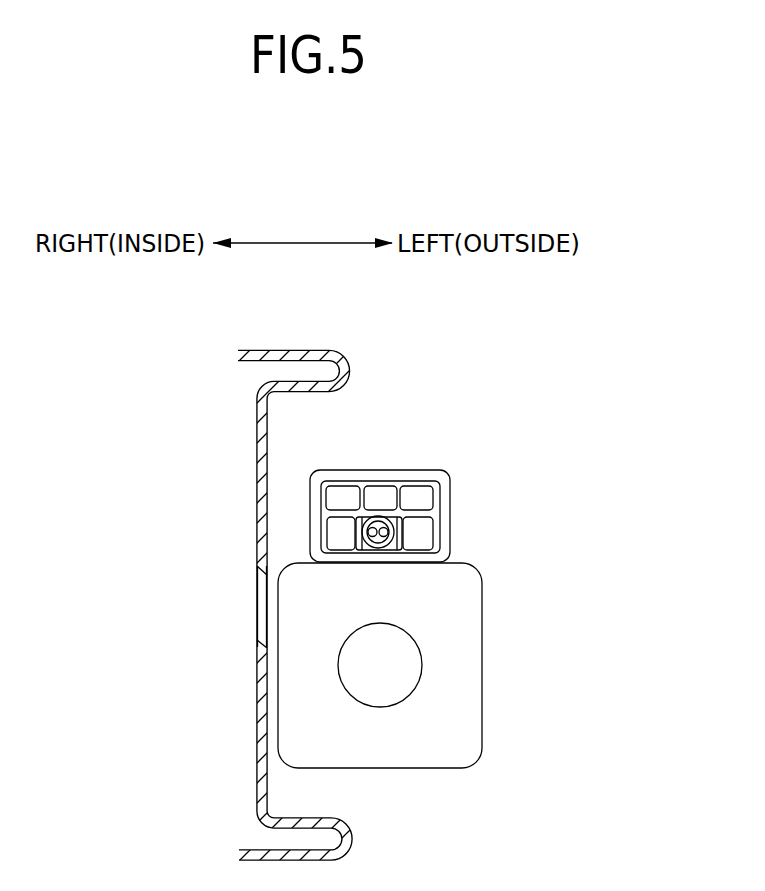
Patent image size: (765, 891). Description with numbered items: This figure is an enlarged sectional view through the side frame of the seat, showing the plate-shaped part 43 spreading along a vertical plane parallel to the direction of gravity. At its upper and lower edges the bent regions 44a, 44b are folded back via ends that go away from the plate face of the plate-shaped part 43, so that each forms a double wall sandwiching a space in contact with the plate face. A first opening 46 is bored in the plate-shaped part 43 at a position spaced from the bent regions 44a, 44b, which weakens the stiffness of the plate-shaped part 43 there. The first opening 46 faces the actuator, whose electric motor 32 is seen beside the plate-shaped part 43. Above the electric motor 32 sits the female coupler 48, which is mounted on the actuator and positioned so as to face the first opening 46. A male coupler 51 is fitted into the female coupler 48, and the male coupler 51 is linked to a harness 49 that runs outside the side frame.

The electric motor 32 is at (482, 712).
The plate-shaped part 43 is at (267, 455).
The upper bent region 44a is at (350, 373).
The lower bent region 44b is at (353, 840).
The first opening 46 is at (258, 578).
The female coupler 48 is at (448, 537).
The harness 49 is at (378, 548).
The male coupler 51 is at (440, 508).